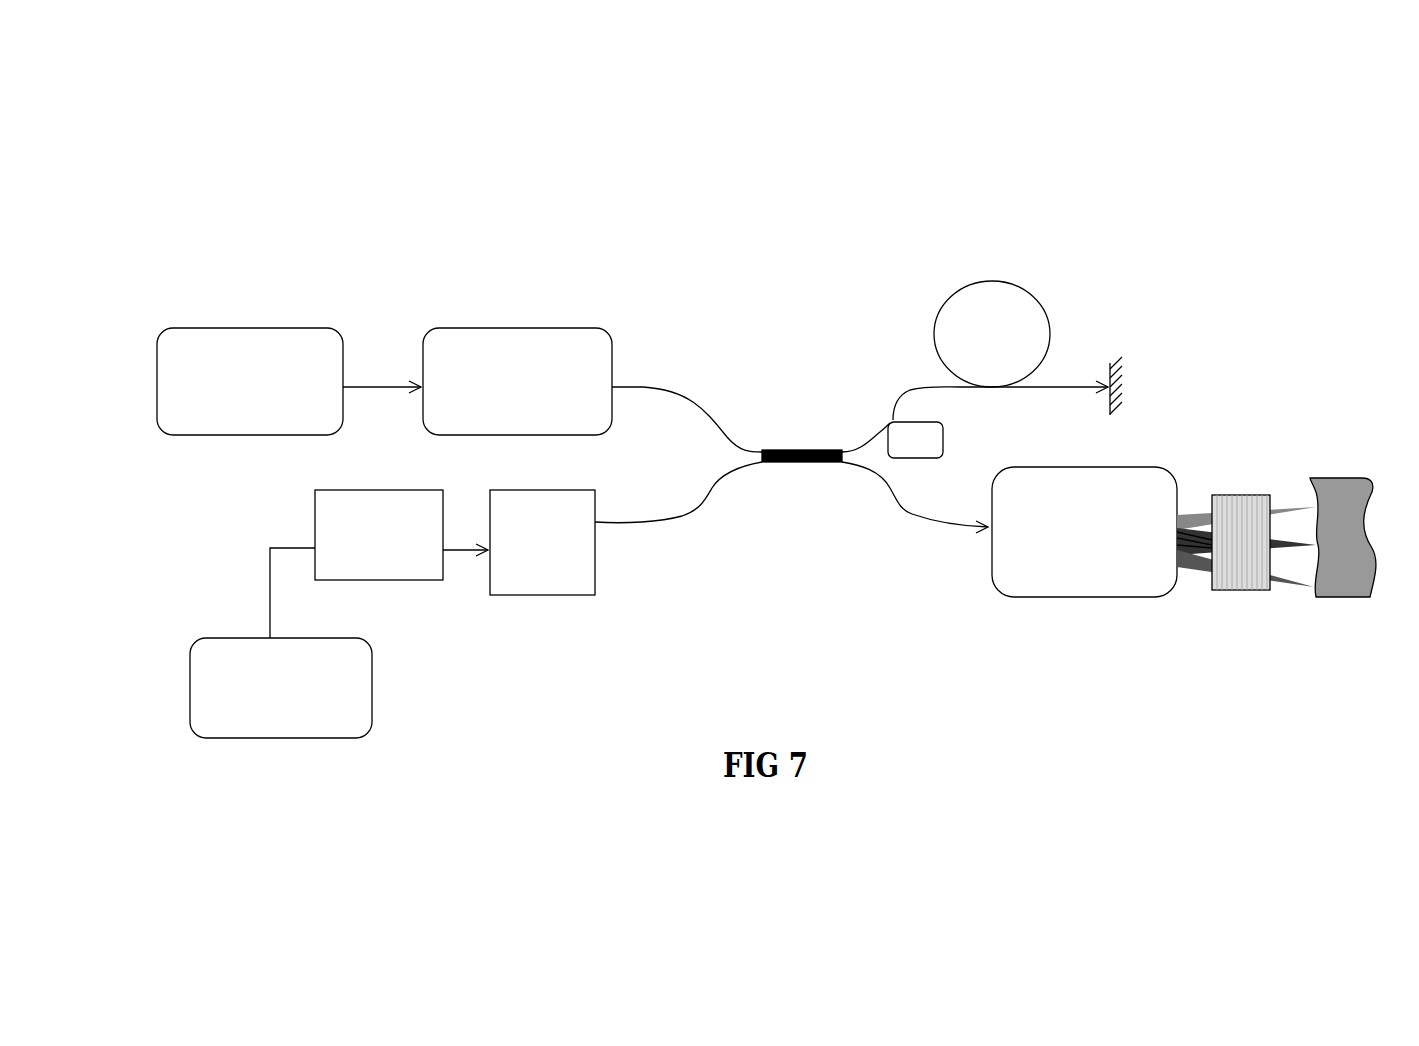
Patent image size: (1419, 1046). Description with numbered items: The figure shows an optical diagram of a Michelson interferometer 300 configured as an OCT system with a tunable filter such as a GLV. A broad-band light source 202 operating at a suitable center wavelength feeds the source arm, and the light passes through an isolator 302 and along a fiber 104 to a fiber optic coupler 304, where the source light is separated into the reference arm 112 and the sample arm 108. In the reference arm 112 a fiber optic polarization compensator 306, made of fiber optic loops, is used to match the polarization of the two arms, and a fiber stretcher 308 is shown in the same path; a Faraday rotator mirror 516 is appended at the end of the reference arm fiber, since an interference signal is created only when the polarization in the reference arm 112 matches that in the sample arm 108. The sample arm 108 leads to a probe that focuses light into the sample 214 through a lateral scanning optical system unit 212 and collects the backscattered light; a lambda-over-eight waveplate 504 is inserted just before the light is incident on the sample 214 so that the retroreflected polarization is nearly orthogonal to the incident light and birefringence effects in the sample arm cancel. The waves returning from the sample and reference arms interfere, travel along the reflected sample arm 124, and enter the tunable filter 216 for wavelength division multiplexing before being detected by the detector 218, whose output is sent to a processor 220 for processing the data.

The interferometer 300 is at (783, 160).
The broad-band light source 202 is at (250, 328).
The isolator 302 is at (505, 328).
The optical fiber (source arm) 104 is at (645, 386).
The fiber coupler / beam splitter 304 is at (795, 450).
The sample arm 108 is at (865, 445).
The fiber optic polarization compensator 306 is at (945, 440).
The fiber stretcher 308 is at (1003, 282).
The Faraday rotator mirror 516 is at (1125, 362).
The detector 218 is at (298, 512).
The tunable filter 216 is at (540, 595).
The processor 220 is at (280, 738).
The reflected sample arm 124 is at (680, 516).
The reference arm 112 is at (912, 515).
The lateral Scanning Optical System unit 212 is at (1027, 597).
The λ/8 waveplate 504 is at (1236, 596).
The sample 214 is at (1355, 598).